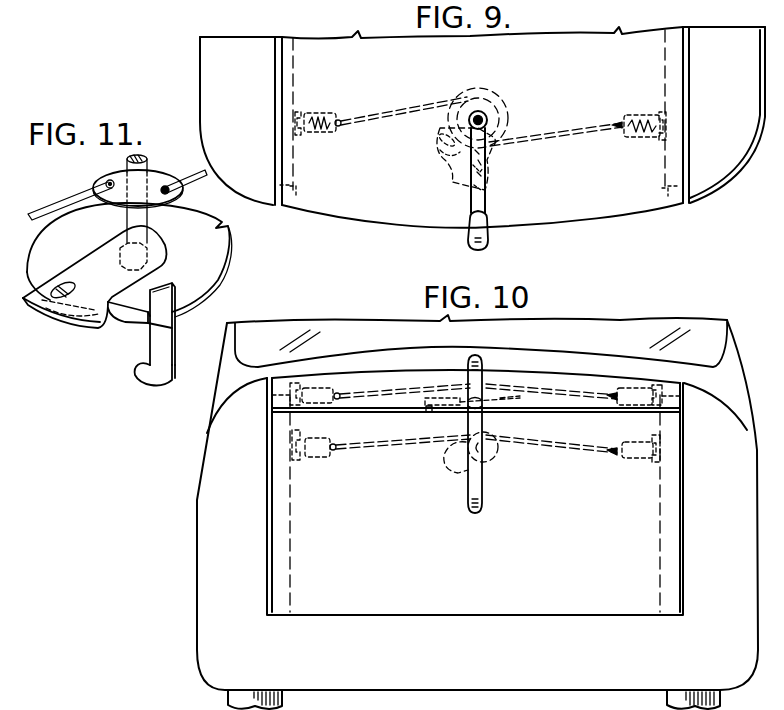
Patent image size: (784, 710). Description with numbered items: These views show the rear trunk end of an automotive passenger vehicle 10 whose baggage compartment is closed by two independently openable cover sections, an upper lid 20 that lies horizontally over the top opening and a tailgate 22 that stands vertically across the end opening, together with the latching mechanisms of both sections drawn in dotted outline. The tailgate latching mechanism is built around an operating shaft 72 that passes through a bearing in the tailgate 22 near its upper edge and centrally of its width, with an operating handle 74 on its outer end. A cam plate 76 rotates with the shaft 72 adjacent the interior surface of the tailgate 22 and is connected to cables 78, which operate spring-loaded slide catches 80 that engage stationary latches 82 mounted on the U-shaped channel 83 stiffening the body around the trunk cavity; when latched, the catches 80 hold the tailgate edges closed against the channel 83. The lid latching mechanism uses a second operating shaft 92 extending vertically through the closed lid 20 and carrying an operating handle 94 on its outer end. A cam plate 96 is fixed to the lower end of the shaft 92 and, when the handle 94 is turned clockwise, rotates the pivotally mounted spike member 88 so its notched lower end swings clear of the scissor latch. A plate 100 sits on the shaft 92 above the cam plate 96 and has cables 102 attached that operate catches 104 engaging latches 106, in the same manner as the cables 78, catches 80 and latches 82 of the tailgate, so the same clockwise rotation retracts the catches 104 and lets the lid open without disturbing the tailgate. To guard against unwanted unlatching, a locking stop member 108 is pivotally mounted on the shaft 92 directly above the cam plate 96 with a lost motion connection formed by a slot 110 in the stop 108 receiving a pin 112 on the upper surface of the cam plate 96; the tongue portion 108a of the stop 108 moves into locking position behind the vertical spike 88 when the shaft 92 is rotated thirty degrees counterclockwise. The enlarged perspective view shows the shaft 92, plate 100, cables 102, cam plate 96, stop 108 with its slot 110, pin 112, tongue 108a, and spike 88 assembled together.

In FIG. 10, the automotive passenger vehicle 10 is at (196, 465).
In FIG. 9, the lid section 20 is at (370, 211).
In FIG. 10, the lid section 20 is at (387, 378).
In FIG. 10, the tailgate section 22 is at (303, 565).
In FIG. 10, the operating shaft 72 is at (498, 440).
In FIG. 9, the operating handle 74 is at (490, 238).
In FIG. 10, the operating handle 74 is at (483, 500).
In FIG. 10, the cam plate 76 is at (455, 470).
In FIG. 10, the cables 78 is at (388, 447).
In FIG. 10, the spring-loaded slide catches 80 is at (300, 458).
In FIG. 10, the stationary latches 82 is at (297, 436).
In FIG. 9, the U-shaped channel 83 is at (291, 182).
In FIG. 10, the U-shaped channel 83 is at (658, 509).
In FIG. 9, the spike member 88 is at (489, 171).
In FIG. 11, the spike member 88 is at (172, 352).
In FIG. 11, the operating shaft 92 is at (145, 162).
In FIG. 9, the operating handle 94 is at (471, 210).
In FIG. 10, the operating handle 94 is at (483, 368).
In FIG. 9, the cam plate 96 is at (510, 97).
In FIG. 10, the cam plate 96 is at (428, 410).
In FIG. 11, the cam plate 96 is at (224, 268).
In FIG. 9, the plate 100 is at (513, 133).
In FIG. 11, the plate 100 is at (165, 180).
In FIG. 9, the cables 102 is at (392, 110).
In FIG. 10, the cables 102 is at (385, 392).
In FIG. 11, the cables 102 is at (60, 205).
In FIG. 9, the catches 104 is at (308, 112).
In FIG. 10, the catches 104 is at (314, 386).
In FIG. 9, the latches 106 is at (301, 110).
In FIG. 10, the latches 106 is at (296, 386).
In FIG. 9, the locking stop member 108 is at (452, 175).
In FIG. 10, the locking stop member 108 is at (432, 401).
In FIG. 11, the locking stop member 108 is at (85, 320).
In FIG. 9, the tongue portion 108a is at (489, 192).
In FIG. 11, the tongue portion 108a is at (143, 329).
In FIG. 9, the slot 110 is at (432, 153).
In FIG. 11, the slot 110 is at (80, 292).
In FIG. 9, the pin 112 is at (437, 129).
In FIG. 11, the pin 112 is at (60, 283).